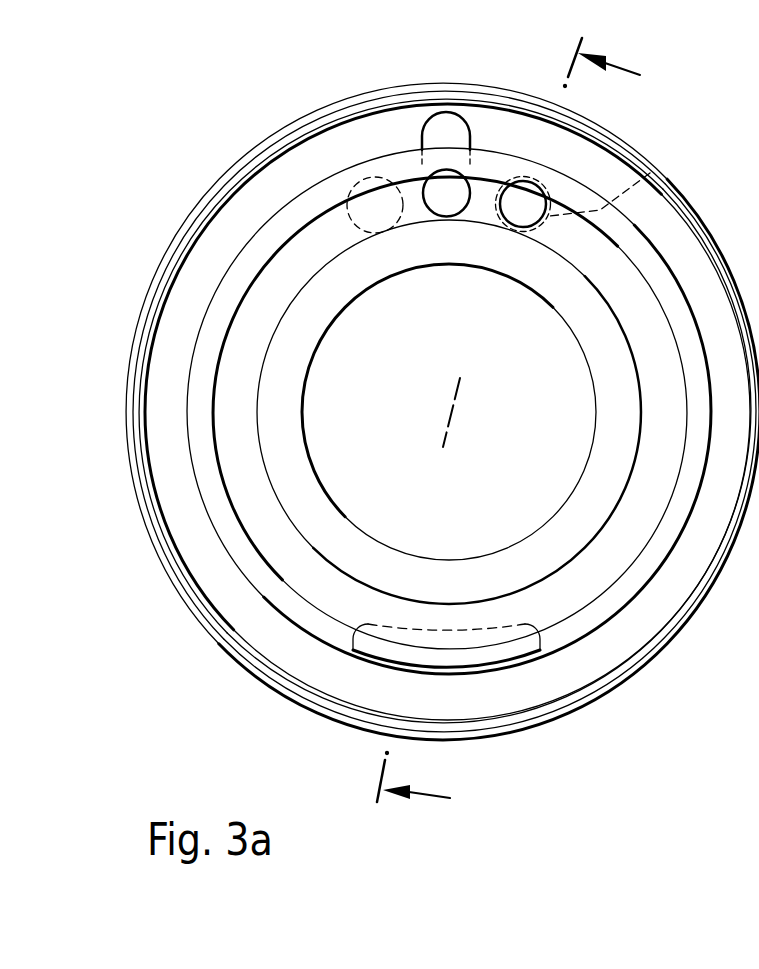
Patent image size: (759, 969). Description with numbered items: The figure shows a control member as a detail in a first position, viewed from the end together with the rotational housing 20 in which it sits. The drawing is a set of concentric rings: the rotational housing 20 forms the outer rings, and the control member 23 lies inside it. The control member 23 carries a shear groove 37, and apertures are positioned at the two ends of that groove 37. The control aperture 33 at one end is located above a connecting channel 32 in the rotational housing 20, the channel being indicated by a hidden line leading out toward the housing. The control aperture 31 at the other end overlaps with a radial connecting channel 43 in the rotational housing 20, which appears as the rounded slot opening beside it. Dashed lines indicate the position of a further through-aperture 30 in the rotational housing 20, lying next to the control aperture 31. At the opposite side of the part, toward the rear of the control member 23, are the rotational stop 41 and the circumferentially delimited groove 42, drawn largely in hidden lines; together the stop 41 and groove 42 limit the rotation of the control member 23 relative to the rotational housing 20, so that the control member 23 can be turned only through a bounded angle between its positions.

The rotational housing 20 is at (192, 227).
The control member 23 is at (277, 225).
The further through-aperture 30 is at (353, 193).
The control aperture 31 is at (440, 198).
The connecting channel 32 is at (650, 173).
The control aperture 33 is at (517, 193).
The shear groove 37 is at (327, 233).
The rotational stop 41 is at (452, 648).
The circumferentially delimited groove 42 is at (540, 650).
The radial connecting channel 43 is at (450, 130).